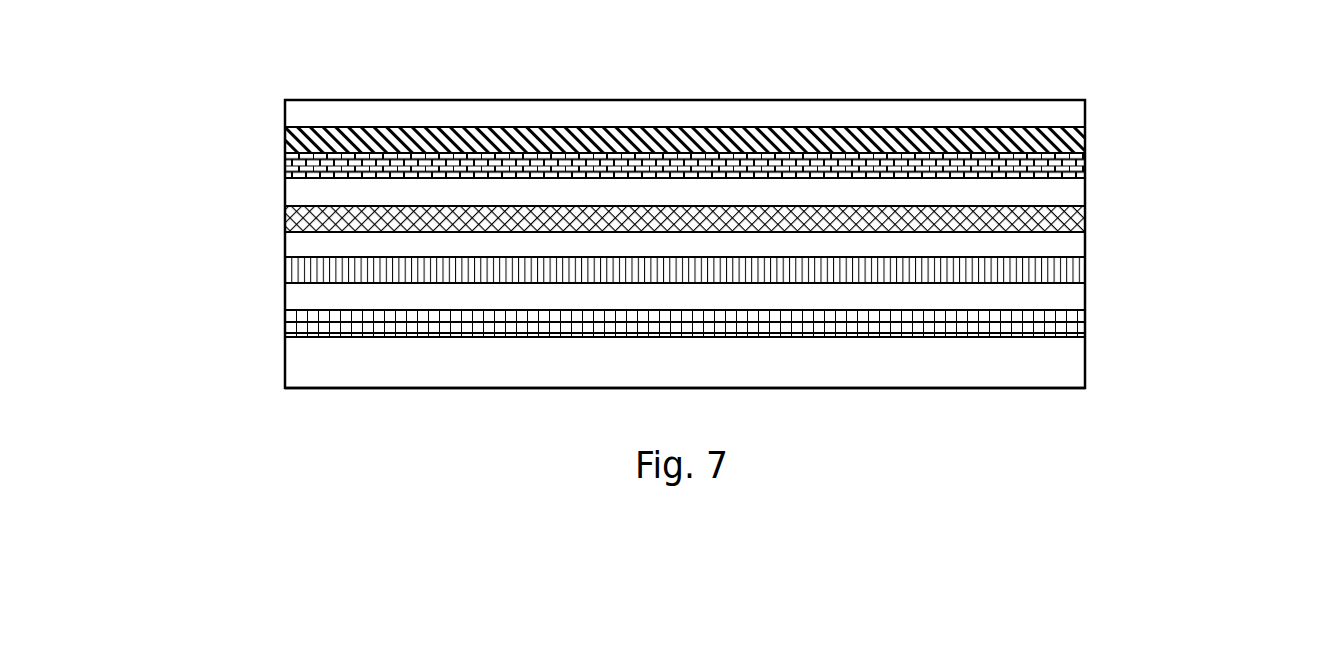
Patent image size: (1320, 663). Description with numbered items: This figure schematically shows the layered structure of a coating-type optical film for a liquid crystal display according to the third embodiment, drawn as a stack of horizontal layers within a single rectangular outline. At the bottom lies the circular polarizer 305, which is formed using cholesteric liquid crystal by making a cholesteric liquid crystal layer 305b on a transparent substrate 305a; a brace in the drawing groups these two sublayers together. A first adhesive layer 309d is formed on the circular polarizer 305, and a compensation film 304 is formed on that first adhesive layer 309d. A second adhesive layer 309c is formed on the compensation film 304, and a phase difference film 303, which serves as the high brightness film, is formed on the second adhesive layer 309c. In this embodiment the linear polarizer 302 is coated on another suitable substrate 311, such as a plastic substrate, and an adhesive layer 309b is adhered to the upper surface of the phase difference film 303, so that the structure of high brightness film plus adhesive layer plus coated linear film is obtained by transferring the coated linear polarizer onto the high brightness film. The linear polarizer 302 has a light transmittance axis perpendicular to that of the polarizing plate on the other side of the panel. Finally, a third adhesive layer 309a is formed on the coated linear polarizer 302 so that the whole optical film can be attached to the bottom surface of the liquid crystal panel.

The linear polarizer 302 is at (1085, 140).
The substrate 311 is at (1085, 168).
The phase difference film 303 is at (1080, 218).
The compensation film 304 is at (1077, 272).
The circular polarizer 305 is at (800, 349).
The transparent substrate 305a is at (1077, 322).
The cholesteric liquid crystal layer 305b is at (1077, 360).
The third adhesive layer 309a is at (298, 115).
The adhesive layer 309b is at (298, 195).
The second adhesive layer 309c is at (303, 247).
The first adhesive layer 309d is at (303, 300).